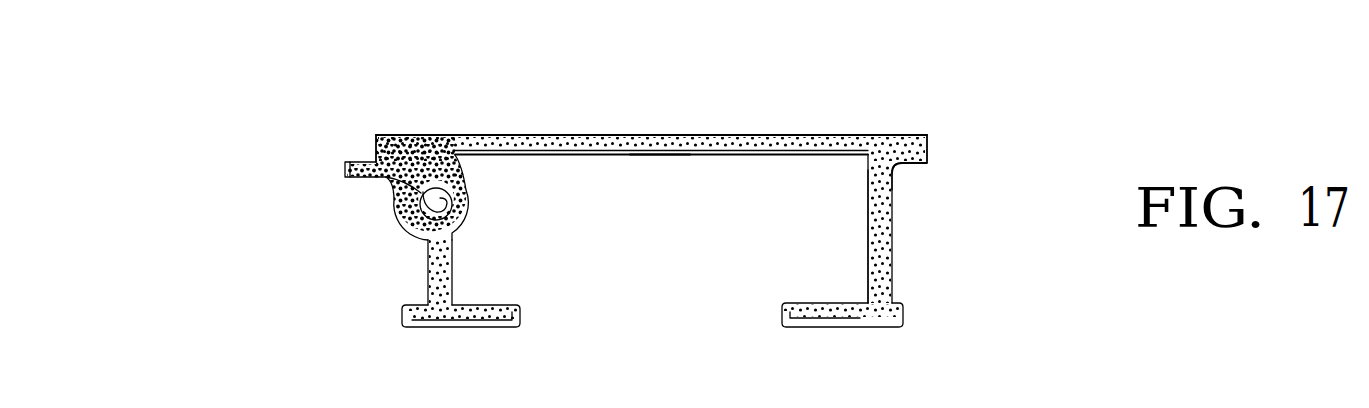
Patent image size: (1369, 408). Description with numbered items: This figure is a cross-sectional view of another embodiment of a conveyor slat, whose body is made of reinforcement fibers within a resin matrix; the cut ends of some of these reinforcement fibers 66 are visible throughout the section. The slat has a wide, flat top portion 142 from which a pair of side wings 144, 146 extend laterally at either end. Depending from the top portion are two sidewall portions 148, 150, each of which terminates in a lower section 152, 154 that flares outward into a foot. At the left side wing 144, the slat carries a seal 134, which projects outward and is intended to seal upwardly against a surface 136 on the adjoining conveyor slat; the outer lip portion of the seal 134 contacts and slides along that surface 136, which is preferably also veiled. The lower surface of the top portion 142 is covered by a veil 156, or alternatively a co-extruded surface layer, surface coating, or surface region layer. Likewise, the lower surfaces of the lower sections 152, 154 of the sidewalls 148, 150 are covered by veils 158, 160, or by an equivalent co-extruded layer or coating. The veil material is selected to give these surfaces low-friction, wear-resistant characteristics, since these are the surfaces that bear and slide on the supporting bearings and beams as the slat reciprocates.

The reinforcement fibers 66 is at (517, 135).
The seal 134 is at (358, 178).
The surface 136 is at (908, 165).
The top portion 142 is at (625, 135).
The side wing 144 is at (398, 135).
The side wing 146 is at (906, 133).
The sidewall portion 148 is at (425, 263).
The sidewall portion 150 is at (932, 236).
The lower section 152 is at (482, 303).
The lower section 154 is at (818, 303).
The veil 156 is at (654, 155).
The veil 158 is at (455, 327).
The veil 160 is at (835, 327).